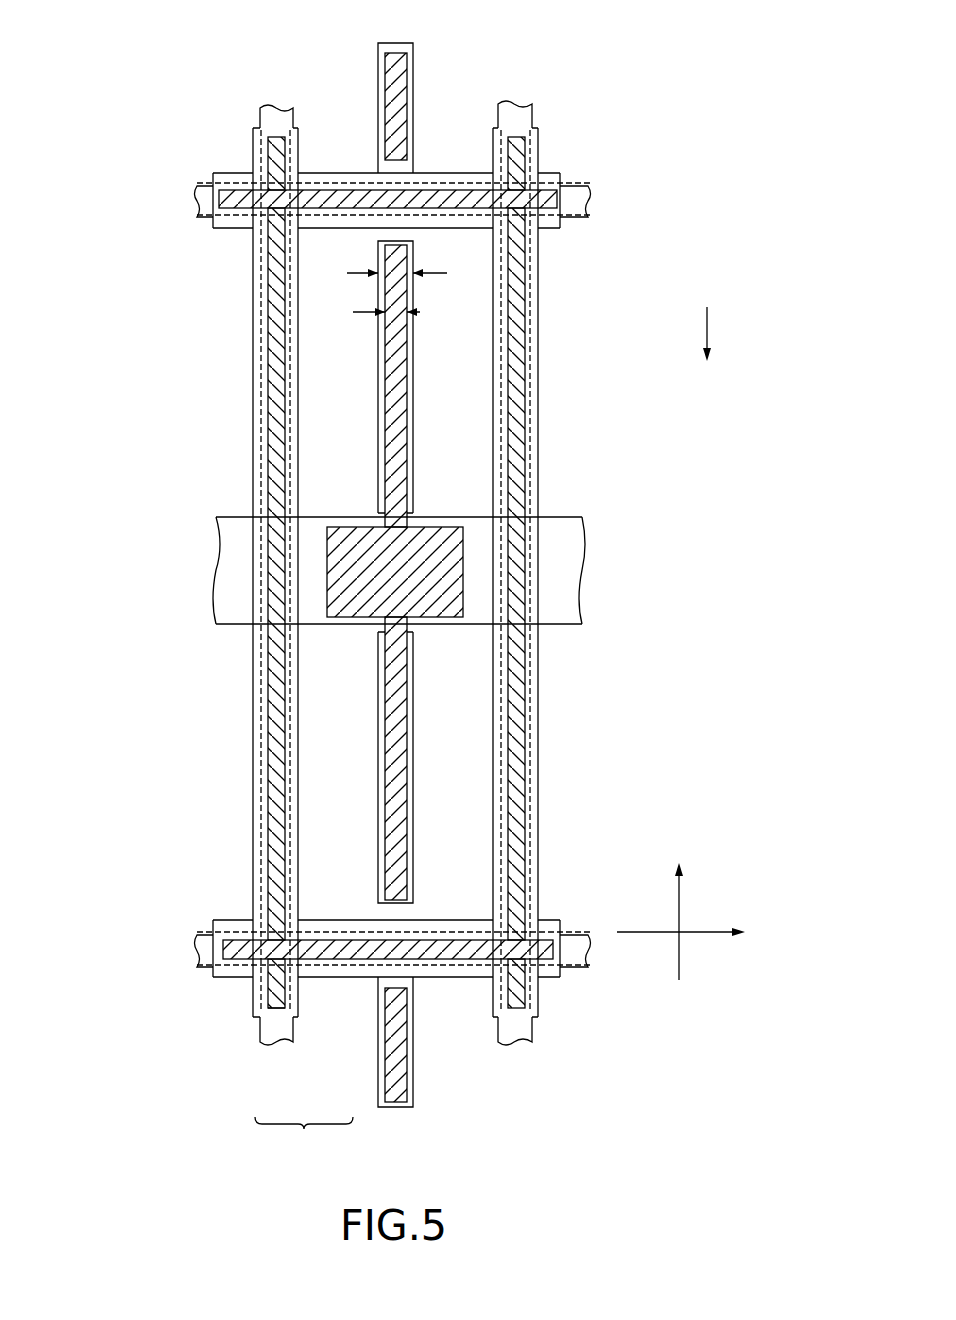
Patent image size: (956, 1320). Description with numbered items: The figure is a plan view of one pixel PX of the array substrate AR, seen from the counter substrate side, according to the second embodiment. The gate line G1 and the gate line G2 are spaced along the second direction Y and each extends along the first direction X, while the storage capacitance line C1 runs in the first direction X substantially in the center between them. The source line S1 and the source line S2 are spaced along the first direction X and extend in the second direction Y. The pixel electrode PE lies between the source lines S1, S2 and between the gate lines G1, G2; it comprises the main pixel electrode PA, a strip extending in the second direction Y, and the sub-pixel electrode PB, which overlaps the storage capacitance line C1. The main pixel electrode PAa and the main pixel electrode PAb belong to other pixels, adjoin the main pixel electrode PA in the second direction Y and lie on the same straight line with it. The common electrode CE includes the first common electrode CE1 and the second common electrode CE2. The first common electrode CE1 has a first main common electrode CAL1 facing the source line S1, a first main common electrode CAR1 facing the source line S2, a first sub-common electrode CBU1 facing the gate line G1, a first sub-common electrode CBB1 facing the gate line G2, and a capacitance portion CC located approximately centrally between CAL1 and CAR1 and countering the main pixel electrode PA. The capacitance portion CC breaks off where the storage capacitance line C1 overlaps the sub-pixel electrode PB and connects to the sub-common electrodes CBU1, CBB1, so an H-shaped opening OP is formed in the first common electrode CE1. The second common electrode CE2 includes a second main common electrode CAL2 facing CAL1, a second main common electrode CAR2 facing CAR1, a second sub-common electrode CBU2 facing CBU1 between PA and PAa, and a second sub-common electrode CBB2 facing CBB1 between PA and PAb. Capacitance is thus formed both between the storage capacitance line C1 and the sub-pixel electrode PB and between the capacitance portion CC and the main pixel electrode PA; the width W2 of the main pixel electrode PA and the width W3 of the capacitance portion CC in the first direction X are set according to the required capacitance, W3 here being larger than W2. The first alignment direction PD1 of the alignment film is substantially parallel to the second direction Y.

The pixel PX is at (530, 190).
The array substrate AR is at (651, 201).
The source line S1 is at (272, 107).
The source line S2 is at (508, 105).
The gate line G1 is at (197, 202).
The gate line G2 is at (195, 943).
The storage capacitance line C1 is at (218, 545).
The main pixel electrode PAa is at (396, 43).
The main pixel electrode PAb is at (395, 1110).
The main pixel electrode PA is at (410, 427).
The sub-pixel electrode PB is at (347, 619).
The pixel electrode PE is at (418, 472).
The capacitance portion CC is at (377, 413).
The width of the main pixel electrode W2 is at (400, 315).
The width of the capacitance portion W3 is at (393, 277).
The first alignment direction PD1 is at (708, 328).
The first sub-common electrode CBU1 is at (452, 178).
The second sub-common electrode CBU2 is at (368, 188).
The first sub-common electrode CBB1 is at (458, 930).
The second sub-common electrode CBB2 is at (352, 952).
The first main common electrode CAL1 is at (253, 700).
The second main common electrode CAL2 is at (265, 657).
The first main common electrode CAR1 is at (538, 698).
The second main common electrode CAR2 is at (525, 648).
The opening OP is at (466, 826).
The first common electrode CE1 is at (304, 1010).
The second common electrode CE2 is at (293, 1020).
The common electrode CE is at (304, 1136).
The first direction X is at (692, 931).
The second direction Y is at (680, 905).